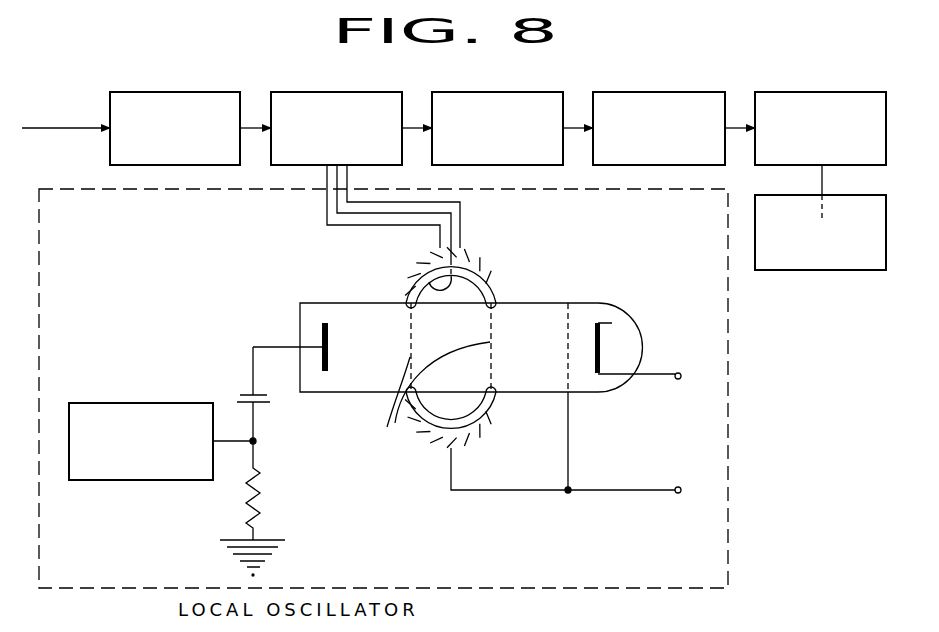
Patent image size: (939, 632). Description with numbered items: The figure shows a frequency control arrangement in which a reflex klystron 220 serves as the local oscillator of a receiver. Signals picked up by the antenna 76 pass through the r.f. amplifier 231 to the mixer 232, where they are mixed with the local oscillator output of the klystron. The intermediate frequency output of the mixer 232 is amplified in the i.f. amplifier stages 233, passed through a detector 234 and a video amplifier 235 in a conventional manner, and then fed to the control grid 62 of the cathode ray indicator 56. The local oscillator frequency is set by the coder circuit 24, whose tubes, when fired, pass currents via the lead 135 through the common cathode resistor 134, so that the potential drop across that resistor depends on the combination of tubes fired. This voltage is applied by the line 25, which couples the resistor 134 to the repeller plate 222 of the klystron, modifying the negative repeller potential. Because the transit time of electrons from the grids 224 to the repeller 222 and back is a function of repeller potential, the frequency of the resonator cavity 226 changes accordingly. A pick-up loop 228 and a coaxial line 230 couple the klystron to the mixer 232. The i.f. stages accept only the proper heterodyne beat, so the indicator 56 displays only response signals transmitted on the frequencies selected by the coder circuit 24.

The antenna 76 is at (59, 120).
The r.f. amplifier 231 is at (162, 90).
The mixer 232 is at (324, 90).
The i.f. amplifier stages 233 is at (484, 90).
The detector 234 is at (644, 90).
The video amplifier 235 is at (806, 90).
The cathode ray indicator 56 is at (794, 194).
The control grid 62 is at (827, 208).
The coaxial line 230 is at (460, 238).
The pick-up loop 228 is at (453, 284).
The reflex klystron 220 is at (710, 347).
The repeller plate 222 is at (328, 368).
The grids 224 is at (425, 396).
The resonator cavity 226 is at (438, 422).
The coder circuit 24 is at (108, 403).
The line 25 is at (255, 427).
The lead 135 is at (230, 443).
The common cathode resistor 134 is at (263, 477).